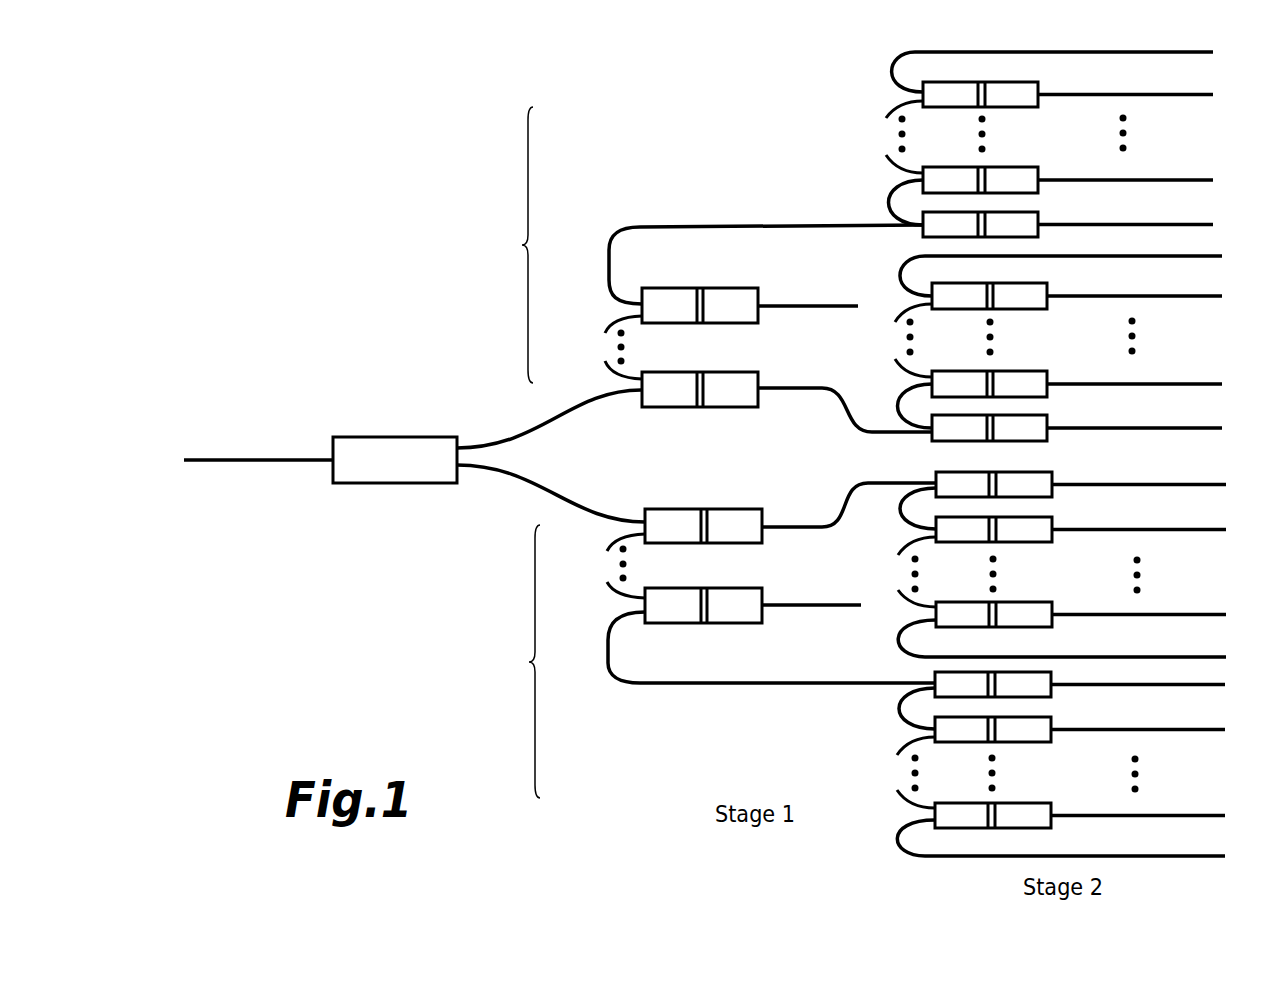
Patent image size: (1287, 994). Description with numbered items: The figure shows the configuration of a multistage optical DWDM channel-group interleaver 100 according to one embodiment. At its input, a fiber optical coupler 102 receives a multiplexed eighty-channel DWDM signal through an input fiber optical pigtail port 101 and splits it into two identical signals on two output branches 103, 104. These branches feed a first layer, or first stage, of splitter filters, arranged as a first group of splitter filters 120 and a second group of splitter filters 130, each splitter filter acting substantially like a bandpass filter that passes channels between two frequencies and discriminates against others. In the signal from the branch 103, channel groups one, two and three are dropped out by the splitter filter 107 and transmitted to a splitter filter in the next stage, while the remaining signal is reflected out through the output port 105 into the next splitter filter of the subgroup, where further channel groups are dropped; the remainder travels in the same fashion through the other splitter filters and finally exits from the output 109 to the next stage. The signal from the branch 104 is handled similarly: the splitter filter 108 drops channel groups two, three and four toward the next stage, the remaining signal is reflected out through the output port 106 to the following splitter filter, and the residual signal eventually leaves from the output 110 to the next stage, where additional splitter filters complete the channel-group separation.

The multistage optical DWDM channel-group interleaver 100 is at (682, 74).
The input fiber optical pigtail port 101 is at (248, 467).
The fiber optical coupler 102 is at (365, 435).
The output port/branch 103 is at (483, 440).
The output port/branch 104 is at (522, 477).
The output port 105 is at (599, 373).
The output port 106 is at (608, 533).
The splitter filter 107 is at (770, 401).
The splitter filter 108 is at (785, 535).
The output to next stage 109 is at (695, 215).
The output to next stage 110 is at (678, 690).
The first group of splitter filters 120 is at (842, 246).
The second group of splitter filters 130 is at (847, 664).